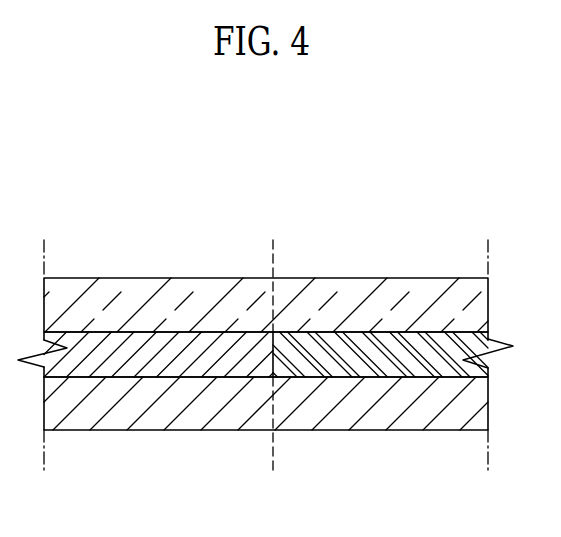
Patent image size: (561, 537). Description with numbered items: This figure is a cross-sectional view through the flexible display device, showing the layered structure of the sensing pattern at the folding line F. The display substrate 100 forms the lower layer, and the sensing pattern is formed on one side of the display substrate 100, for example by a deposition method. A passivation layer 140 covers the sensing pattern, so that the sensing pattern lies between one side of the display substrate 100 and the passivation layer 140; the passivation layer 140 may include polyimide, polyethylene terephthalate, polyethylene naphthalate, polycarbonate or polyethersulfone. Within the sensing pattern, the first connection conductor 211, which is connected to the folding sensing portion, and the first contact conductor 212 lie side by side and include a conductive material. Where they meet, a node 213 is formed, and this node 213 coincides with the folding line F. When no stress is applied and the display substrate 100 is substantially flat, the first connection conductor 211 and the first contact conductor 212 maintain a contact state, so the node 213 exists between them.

The display substrate 100 is at (210, 300).
The passivation layer 140 is at (392, 408).
The first connection conductor 211 is at (390, 352).
The first contact conductor 212 is at (138, 352).
The node 213 is at (273, 345).
The folding line F is at (272, 343).